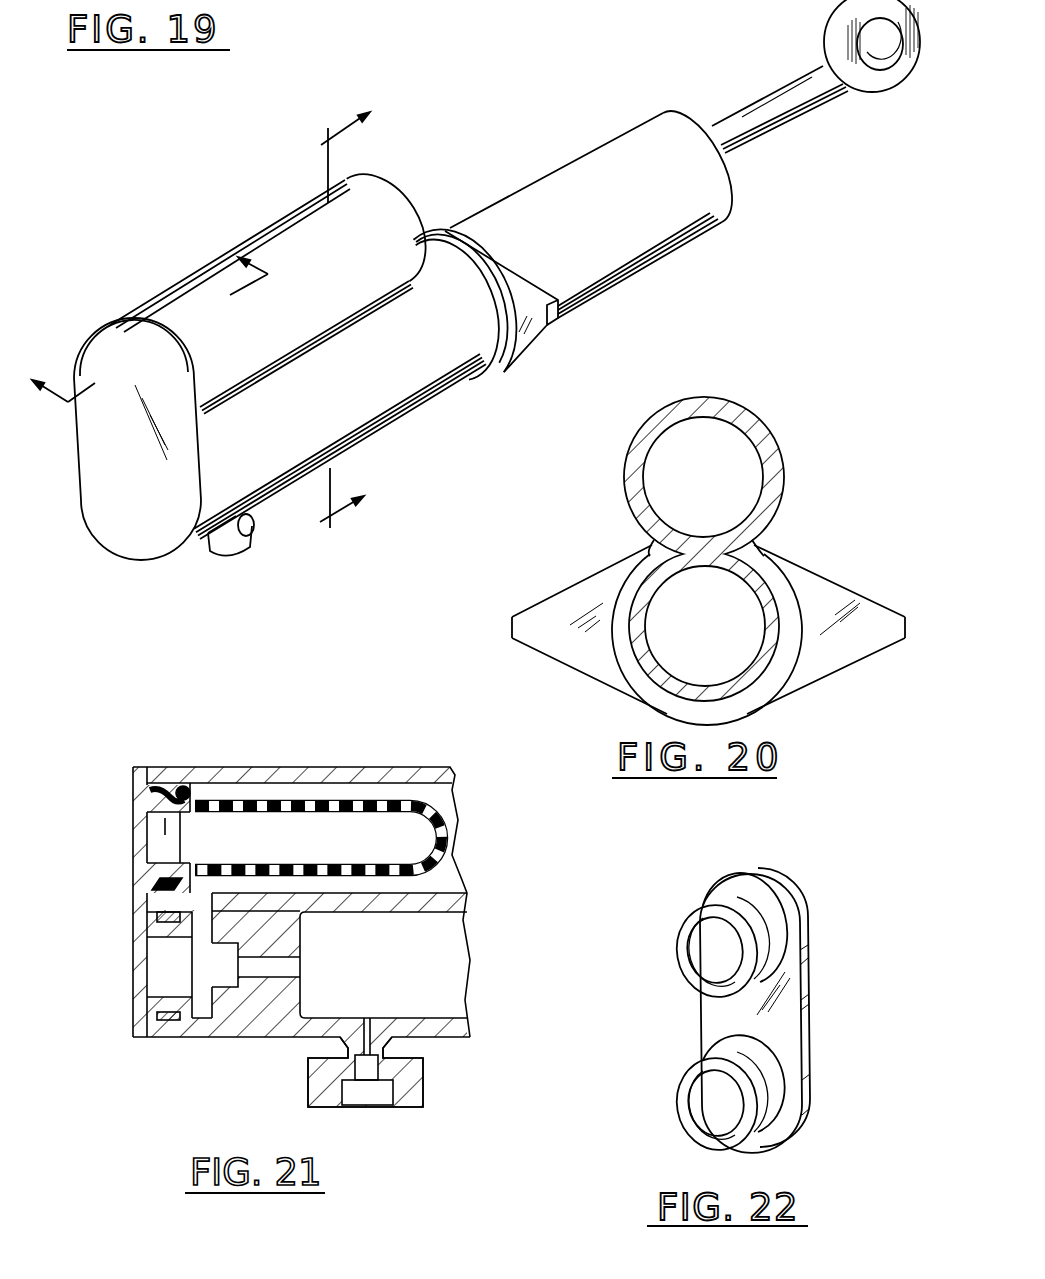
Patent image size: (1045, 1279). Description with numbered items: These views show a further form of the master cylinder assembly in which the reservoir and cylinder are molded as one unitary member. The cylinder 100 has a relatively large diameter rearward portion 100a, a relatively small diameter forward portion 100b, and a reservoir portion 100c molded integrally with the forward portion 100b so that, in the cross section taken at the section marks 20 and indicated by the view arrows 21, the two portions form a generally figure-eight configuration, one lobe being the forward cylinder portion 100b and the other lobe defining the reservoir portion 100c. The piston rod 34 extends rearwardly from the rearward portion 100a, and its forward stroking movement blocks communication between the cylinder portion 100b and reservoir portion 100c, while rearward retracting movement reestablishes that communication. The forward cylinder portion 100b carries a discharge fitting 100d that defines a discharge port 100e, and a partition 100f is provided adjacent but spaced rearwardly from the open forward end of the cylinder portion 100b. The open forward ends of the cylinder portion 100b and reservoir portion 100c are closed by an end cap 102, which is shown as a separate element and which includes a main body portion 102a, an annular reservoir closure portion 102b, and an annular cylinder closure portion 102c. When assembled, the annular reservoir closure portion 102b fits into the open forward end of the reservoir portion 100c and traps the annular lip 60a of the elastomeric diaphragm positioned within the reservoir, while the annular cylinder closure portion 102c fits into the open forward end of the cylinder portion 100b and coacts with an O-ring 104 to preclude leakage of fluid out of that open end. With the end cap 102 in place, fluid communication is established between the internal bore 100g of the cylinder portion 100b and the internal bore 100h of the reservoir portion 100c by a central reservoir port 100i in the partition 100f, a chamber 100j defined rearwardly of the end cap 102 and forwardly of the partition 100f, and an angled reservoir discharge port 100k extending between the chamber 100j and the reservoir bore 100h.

In FIG. 19, the section line 20- 20 is at (360, 313).
In FIG. 19, the view line 21- 21 is at (167, 341).
In FIG. 19, the piston rod 34 is at (775, 107).
In FIG. 19, the cylinder 100 is at (454, 198).
In FIG. 19, the rearward portion 100a is at (648, 204).
In FIG. 19, the forward portion 100b is at (384, 387).
In FIG. 20, the forward portion 100b is at (780, 583).
In FIG. 19, the reservoir portion 100c is at (273, 327).
In FIG. 20, the reservoir portion 100c is at (748, 413).
In FIG. 21, the reservoir portion 100c is at (355, 758).
In FIG. 21, the discharge fitting 100d is at (425, 1083).
In FIG. 21, the discharge port 100e is at (367, 1022).
In FIG. 21, the partition 100f is at (293, 1003).
In FIG. 21, the internal bore 100g is at (440, 917).
In FIG. 21, the internal bore 100h is at (453, 800).
In FIG. 21, the central reservoir port 100i is at (290, 960).
In FIG. 21, the chamber 100j is at (170, 965).
In FIG. 21, the angled reservoir discharge port 100k is at (222, 908).
In FIG. 19, the end cap 102 is at (120, 488).
In FIG. 21, the end cap 102 is at (120, 830).
In FIG. 22, the end cap 102 is at (793, 878).
In FIG. 22, the main body portion 102a is at (805, 1040).
In FIG. 21, the annular reservoir closure portion 102b is at (160, 813).
In FIG. 22, the annular reservoir closure portion 102b is at (678, 928).
In FIG. 21, the annular cylinder closure portion 102c is at (198, 1005).
In FIG. 22, the annular cylinder closure portion 102c is at (678, 1113).
In FIG. 21, the O-ring 104 is at (177, 1020).
In FIG. 21, the lip portion 60a is at (183, 786).